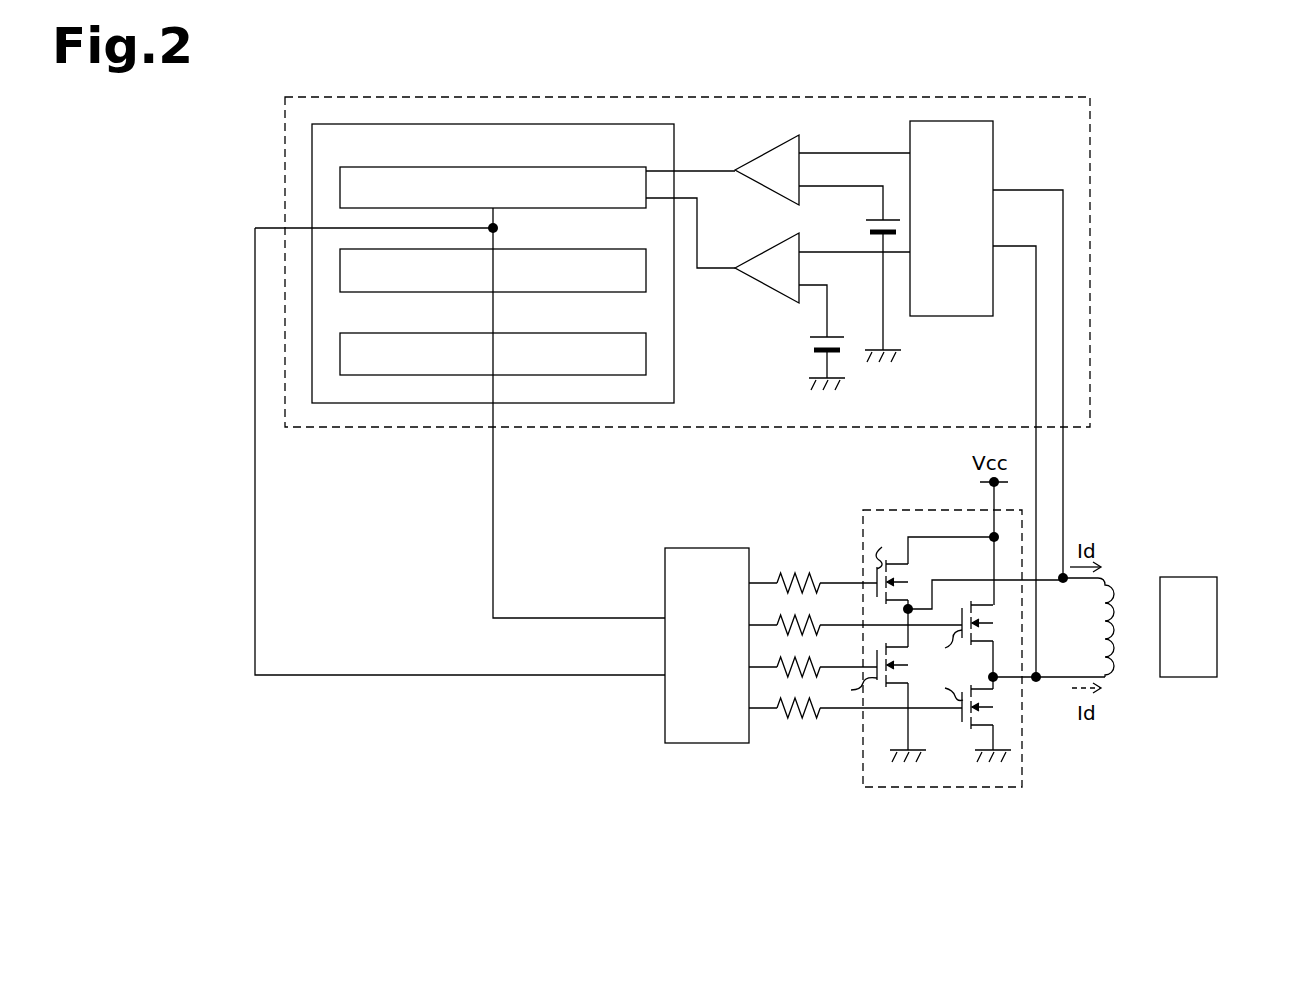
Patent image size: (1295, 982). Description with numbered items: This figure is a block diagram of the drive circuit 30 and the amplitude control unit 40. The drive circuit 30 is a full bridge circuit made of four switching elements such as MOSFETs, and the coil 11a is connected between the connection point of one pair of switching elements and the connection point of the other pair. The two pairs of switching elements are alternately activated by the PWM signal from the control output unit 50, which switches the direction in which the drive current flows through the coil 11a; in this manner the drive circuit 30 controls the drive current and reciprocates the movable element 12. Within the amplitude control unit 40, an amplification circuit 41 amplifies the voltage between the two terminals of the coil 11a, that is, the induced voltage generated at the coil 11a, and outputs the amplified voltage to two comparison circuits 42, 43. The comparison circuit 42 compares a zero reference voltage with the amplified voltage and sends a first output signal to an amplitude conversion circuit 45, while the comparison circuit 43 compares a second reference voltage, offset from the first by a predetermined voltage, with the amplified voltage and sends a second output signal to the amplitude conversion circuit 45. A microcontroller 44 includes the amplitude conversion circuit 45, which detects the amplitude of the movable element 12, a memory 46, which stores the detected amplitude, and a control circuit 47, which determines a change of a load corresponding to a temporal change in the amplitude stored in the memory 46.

The amplitude control unit 40 is at (876, 93).
The amplification circuit 41 is at (993, 150).
The comparison circuit 42 is at (752, 161).
The comparison circuit 43 is at (752, 257).
The microcontroller 44 is at (510, 124).
The amplitude conversion circuit 45 is at (610, 160).
The memory 46 is at (610, 243).
The control circuit 47 is at (610, 326).
The control output unit 50 is at (665, 568).
The drive circuit 30 is at (891, 508).
The coil 11a is at (1113, 590).
The movable element 12 is at (1217, 605).